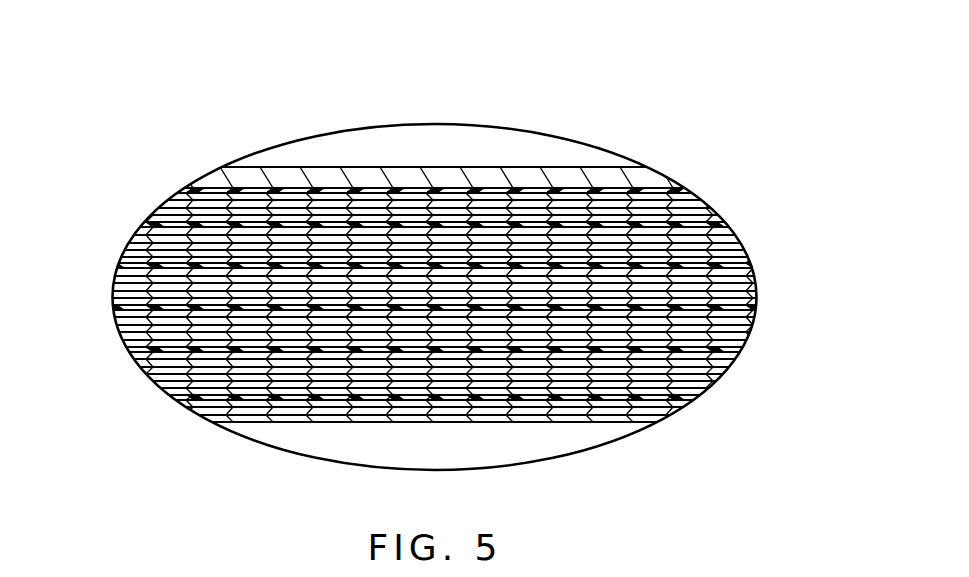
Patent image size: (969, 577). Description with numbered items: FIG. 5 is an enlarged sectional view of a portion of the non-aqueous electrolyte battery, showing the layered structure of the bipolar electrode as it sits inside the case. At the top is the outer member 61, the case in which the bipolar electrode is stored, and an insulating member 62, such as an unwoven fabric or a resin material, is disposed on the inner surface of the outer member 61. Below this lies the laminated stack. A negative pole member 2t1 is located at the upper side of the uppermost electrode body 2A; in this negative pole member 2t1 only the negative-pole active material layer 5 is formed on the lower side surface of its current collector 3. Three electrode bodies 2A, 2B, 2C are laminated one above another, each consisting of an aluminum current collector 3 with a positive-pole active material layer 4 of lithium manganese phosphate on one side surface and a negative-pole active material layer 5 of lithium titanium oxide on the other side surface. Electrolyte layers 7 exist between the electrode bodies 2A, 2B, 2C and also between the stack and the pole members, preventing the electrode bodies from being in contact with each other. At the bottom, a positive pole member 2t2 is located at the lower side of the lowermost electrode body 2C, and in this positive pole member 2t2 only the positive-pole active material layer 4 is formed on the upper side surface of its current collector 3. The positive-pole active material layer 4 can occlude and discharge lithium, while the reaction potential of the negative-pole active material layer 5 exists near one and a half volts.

The current collector 3 is at (708, 199).
The positive-pole active material layer 4 is at (737, 238).
The negative-pole active material layer 5 is at (718, 220).
The electrolyte layer 7 is at (730, 228).
The outer member (case) 61 is at (487, 181).
The insulating member 62 is at (412, 190).
The negative pole member 2t1 is at (765, 138).
The electrode body 2A is at (820, 200).
The electrode body 2B is at (78, 265).
The electrode body 2C is at (825, 330).
The positive pole member 2t2 is at (762, 378).